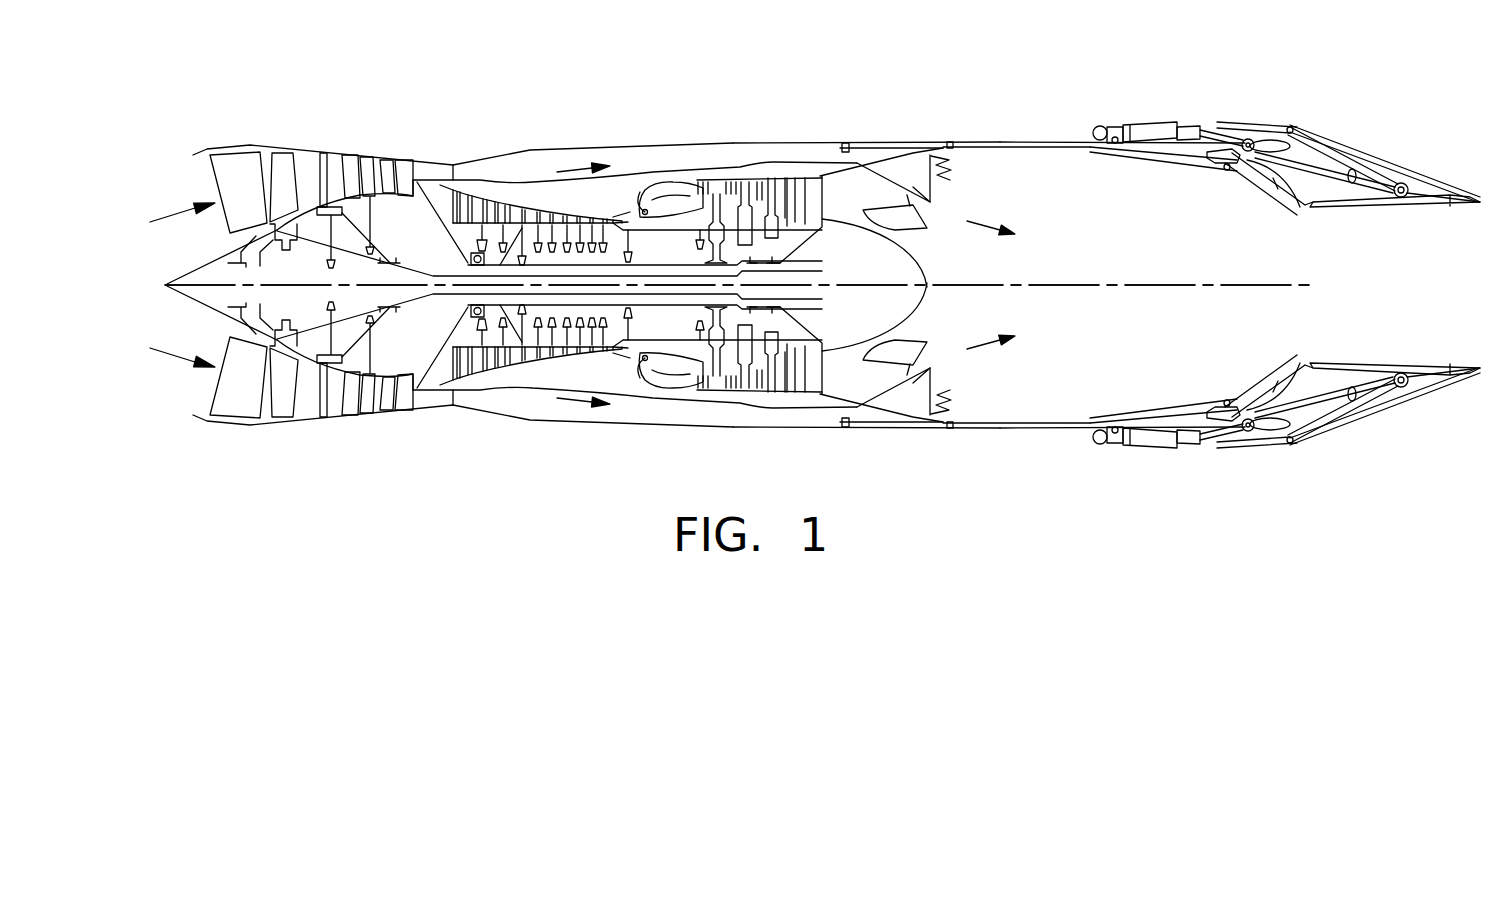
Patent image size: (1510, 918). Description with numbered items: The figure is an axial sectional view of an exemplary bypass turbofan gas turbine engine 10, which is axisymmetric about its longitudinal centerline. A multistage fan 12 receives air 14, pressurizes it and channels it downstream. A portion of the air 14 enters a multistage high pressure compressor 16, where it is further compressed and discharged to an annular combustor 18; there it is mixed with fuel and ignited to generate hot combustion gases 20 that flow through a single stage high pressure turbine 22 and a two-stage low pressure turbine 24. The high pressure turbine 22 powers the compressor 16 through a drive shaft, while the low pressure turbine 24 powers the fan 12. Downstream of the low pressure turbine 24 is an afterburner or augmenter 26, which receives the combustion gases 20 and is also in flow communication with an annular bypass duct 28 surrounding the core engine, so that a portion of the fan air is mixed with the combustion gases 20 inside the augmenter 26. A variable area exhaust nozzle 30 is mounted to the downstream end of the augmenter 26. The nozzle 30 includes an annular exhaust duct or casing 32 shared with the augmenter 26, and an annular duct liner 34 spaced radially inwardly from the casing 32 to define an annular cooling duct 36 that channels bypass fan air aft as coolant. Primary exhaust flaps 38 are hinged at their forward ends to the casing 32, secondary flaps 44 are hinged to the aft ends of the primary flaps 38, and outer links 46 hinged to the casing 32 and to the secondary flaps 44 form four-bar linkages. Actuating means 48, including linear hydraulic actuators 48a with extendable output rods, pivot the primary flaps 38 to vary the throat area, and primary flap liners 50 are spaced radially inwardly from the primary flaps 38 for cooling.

The bypass turbofan gas turbine engine 10 is at (651, 128).
The multistage fan 12 is at (321, 151).
The air 14 is at (167, 218).
The multistage high pressure compressor 16 is at (522, 208).
The annular combustor 18 is at (673, 185).
The combustion gases 20 is at (978, 227).
The high pressure turbine 22 is at (715, 180).
The low pressure turbine 24 is at (770, 177).
The augmenter 26 is at (973, 131).
The annular bypass duct 28 is at (533, 165).
The variable area exhaust nozzle 30 is at (1284, 118).
The exhaust duct or casing 32 is at (1023, 143).
The exhaust or duct liner 34 is at (1083, 153).
The annular cooling duct 36 is at (1010, 148).
The primary exhaust flaps 38 is at (1292, 162).
The secondary flaps 44 is at (1370, 205).
The outer links 46 is at (1357, 172).
The actuating means 48 is at (1188, 121).
The linear hydraulic actuators 48a is at (1160, 125).
The primary flap liners 50 is at (1255, 187).